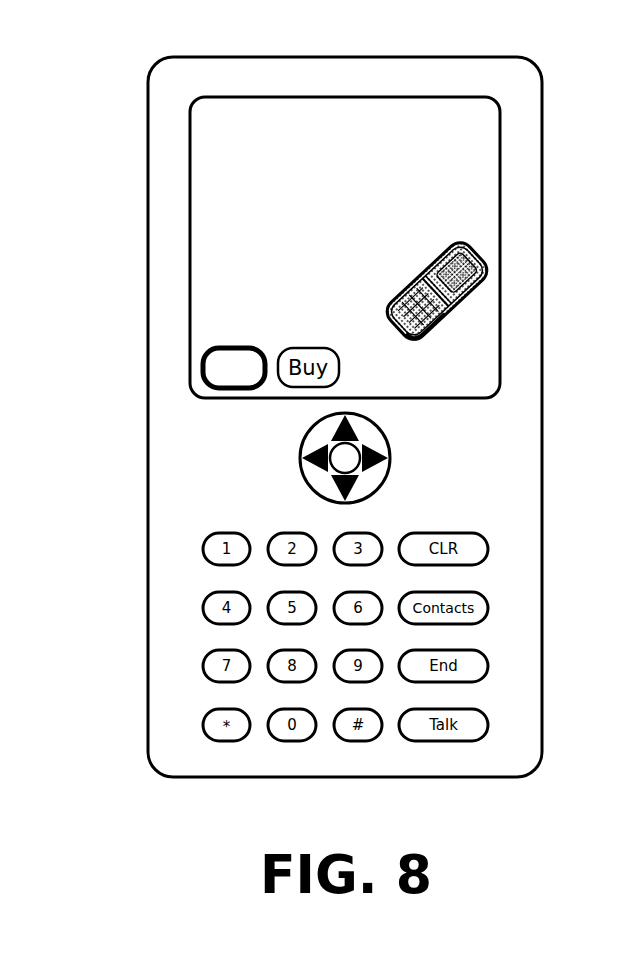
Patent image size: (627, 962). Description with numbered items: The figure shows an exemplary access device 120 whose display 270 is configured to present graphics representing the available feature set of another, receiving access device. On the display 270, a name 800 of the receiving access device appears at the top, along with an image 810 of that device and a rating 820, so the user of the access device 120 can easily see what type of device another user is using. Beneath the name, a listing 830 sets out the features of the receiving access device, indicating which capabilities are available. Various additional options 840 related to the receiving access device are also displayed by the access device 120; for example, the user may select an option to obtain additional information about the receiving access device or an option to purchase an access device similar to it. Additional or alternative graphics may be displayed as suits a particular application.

The access device 120 is at (543, 74).
The display 270 is at (373, 108).
The name 800 is at (436, 137).
The image 810 is at (470, 307).
The rating 820 is at (207, 310).
The listing of features 830 is at (203, 152).
The additional options 840 is at (207, 378).